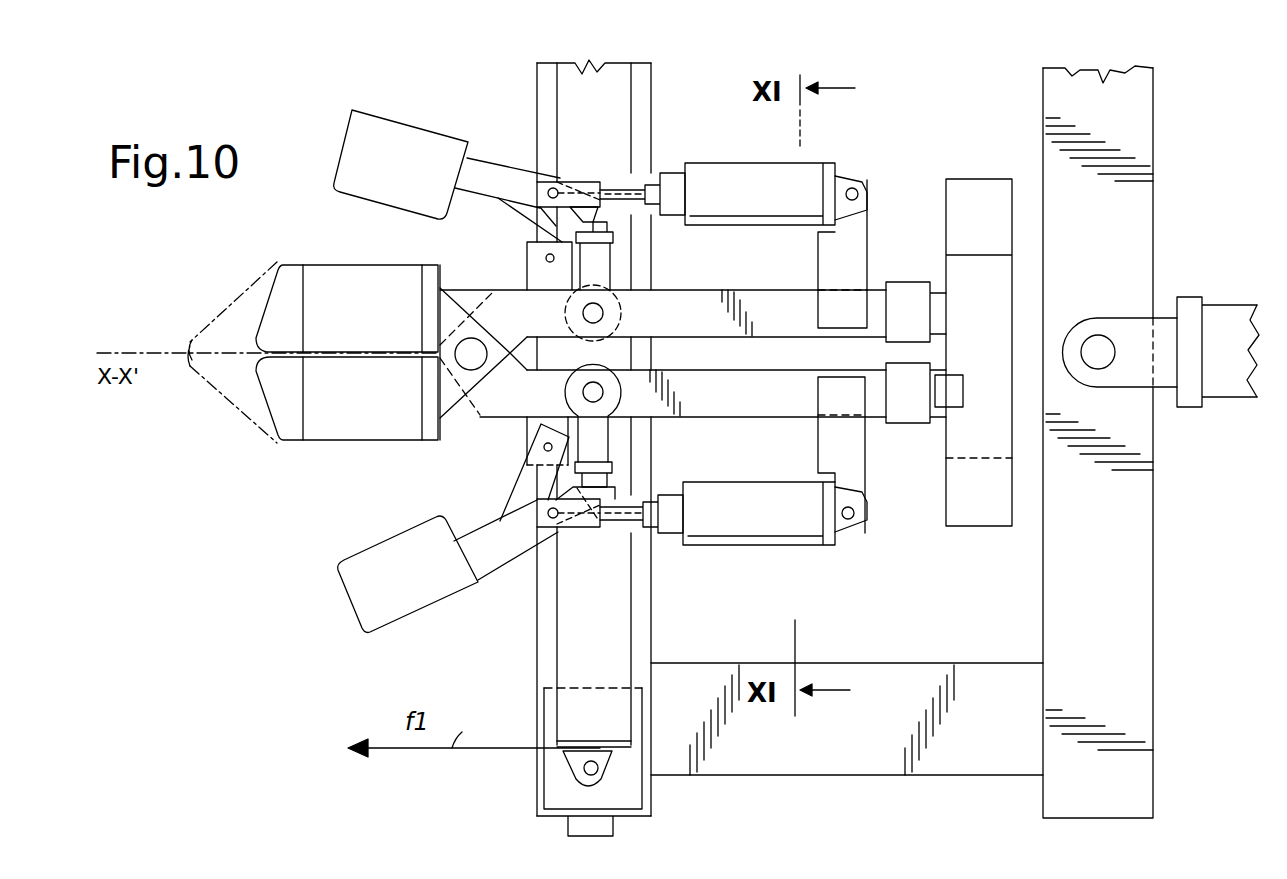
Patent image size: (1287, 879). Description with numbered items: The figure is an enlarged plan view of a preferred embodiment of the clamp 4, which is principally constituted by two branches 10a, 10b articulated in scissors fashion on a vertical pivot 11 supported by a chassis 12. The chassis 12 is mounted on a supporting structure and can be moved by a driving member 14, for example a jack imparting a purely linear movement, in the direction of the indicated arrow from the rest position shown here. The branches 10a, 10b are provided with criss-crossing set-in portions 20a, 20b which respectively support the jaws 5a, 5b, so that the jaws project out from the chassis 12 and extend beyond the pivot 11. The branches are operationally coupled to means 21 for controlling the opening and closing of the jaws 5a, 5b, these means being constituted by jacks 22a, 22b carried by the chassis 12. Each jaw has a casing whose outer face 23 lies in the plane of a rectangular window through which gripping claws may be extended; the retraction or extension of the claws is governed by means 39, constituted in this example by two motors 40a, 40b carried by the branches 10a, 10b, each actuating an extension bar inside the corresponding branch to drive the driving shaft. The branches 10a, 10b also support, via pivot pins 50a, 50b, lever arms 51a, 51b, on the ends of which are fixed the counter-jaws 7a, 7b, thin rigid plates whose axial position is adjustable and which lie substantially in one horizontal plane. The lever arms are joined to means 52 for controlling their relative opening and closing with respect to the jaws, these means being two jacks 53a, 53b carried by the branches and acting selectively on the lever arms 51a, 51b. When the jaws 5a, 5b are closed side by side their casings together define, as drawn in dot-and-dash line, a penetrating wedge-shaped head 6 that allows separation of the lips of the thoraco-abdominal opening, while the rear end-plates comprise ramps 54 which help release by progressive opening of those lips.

The clamp 4 is at (673, 353).
The jaw 5a is at (347, 398).
The jaw 5b is at (347, 308).
The wedge-shaped head 6 is at (331, 361).
The counter-jaw 7a is at (345, 150).
The counter-jaw 7b is at (342, 572).
The branch 10a is at (770, 297).
The branch 10b is at (774, 402).
The vertical pivot 11 is at (462, 357).
The chassis 12 is at (890, 662).
The driving member 14 is at (1235, 310).
The set-in portion 20a is at (488, 312).
The set-in portion 20b is at (475, 378).
The means for controlling the opening and closing of the jaws 21 is at (613, 134).
The jack 22a is at (617, 82).
The jack 22b is at (578, 725).
The outer face 23 is at (292, 270).
The means controlling the retraction or extension of claws 39 is at (1021, 336).
The motor 40a is at (1000, 236).
The motor 40b is at (995, 494).
The pivot pin 50a is at (546, 258).
The pivot pin 50b is at (545, 449).
The lever arm 51a is at (443, 186).
The lever arm 51b is at (444, 528).
The means for controlling the opening and closing of the lever arms 52 is at (763, 216).
The jack 53a is at (813, 166).
The jack 53b is at (810, 546).
The ramp 54 is at (450, 268).